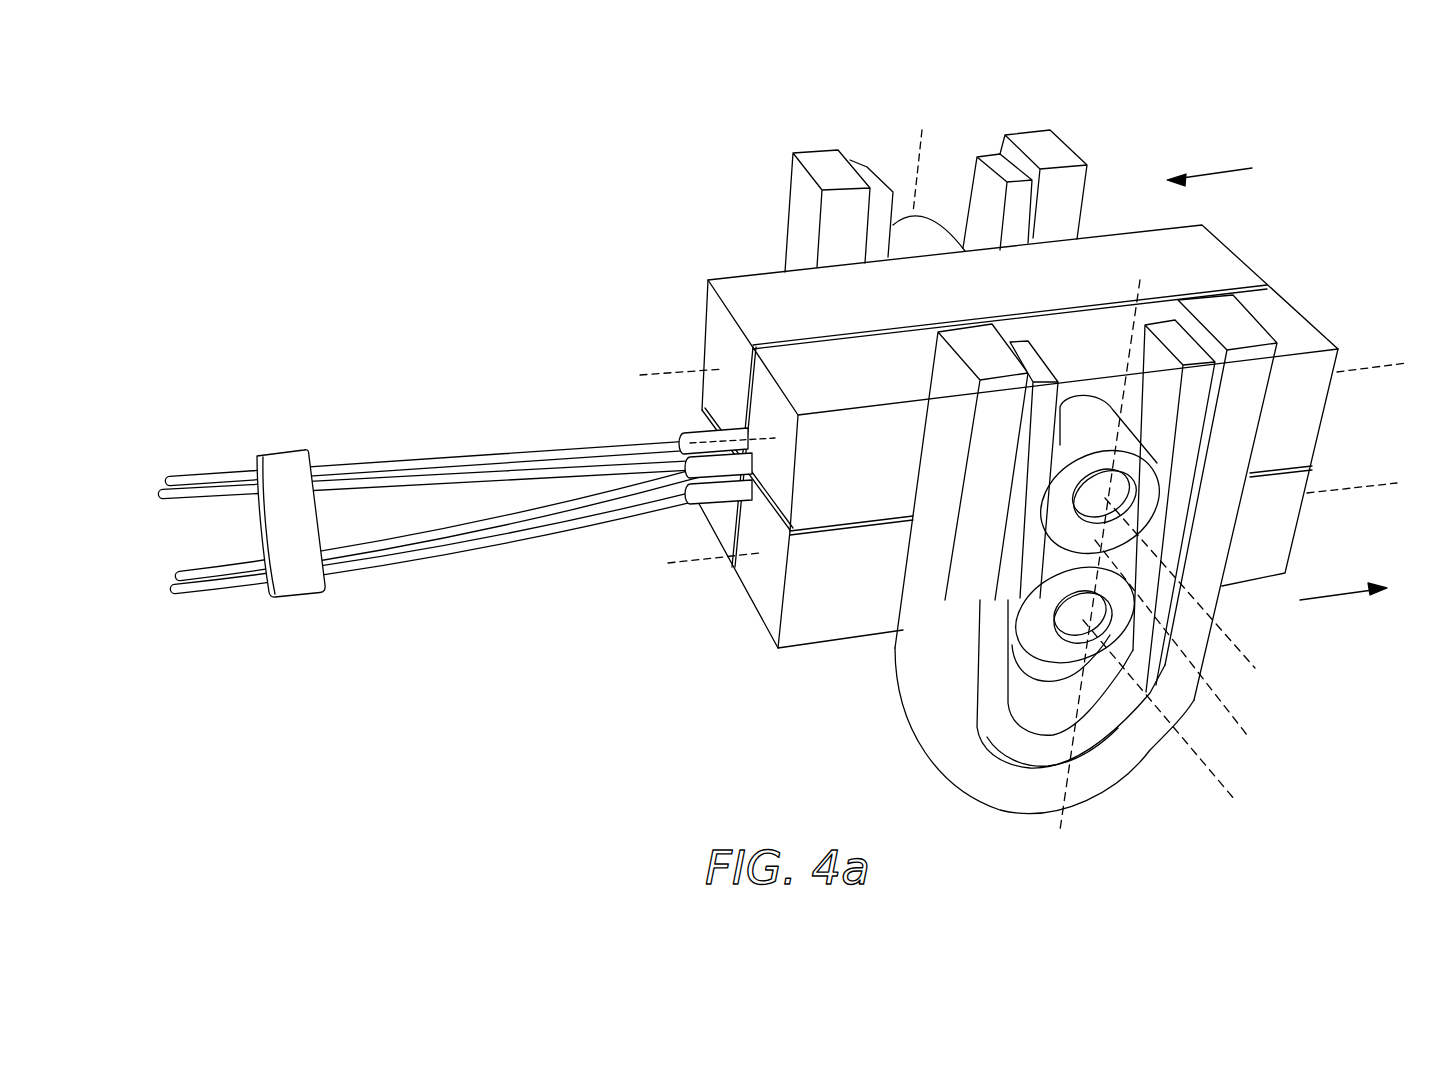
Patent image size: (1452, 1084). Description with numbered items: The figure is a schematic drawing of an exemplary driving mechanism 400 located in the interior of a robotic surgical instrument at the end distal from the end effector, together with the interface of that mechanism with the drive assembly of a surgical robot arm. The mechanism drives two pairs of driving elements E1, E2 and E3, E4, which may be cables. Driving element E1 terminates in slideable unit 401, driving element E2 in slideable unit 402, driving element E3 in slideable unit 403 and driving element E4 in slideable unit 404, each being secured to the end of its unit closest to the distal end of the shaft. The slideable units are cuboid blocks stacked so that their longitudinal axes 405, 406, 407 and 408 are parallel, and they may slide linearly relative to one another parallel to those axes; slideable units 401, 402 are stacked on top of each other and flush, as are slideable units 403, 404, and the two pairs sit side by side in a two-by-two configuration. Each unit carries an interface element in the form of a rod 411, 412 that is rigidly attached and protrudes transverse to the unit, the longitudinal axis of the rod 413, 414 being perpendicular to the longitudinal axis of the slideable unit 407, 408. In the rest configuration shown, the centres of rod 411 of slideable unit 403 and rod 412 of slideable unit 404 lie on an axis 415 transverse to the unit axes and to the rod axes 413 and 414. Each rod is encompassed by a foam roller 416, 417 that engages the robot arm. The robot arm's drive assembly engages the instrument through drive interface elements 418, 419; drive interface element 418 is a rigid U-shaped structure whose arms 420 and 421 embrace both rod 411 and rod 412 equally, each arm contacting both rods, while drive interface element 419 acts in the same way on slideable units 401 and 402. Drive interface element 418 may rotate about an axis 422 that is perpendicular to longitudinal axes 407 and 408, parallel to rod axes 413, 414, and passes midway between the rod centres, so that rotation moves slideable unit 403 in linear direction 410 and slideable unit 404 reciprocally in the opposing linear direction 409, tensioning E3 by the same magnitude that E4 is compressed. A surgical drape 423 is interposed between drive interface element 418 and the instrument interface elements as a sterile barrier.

The driving mechanism 400 is at (513, 208).
The slideable unit 401 is at (712, 307).
The slideable unit 402 is at (716, 520).
The slideable unit 403 is at (1308, 434).
The slideable unit 404 is at (1283, 548).
The longitudinal axis 405 is at (640, 375).
The longitudinal axis 406 is at (434, 503).
The longitudinal axis 407 is at (762, 442).
The longitudinal axis 408 is at (680, 568).
The linear direction 409 is at (1350, 600).
The linear direction 410 is at (1207, 170).
The rod 411 is at (1128, 500).
The rod 412 is at (985, 663).
The longitudinal axis of the rod 413 is at (1258, 652).
The longitudinal axis of the rod 414 is at (1228, 782).
The axis 415 is at (1082, 792).
The foam roller 416 is at (1099, 462).
The foam roller 417 is at (1040, 650).
The drive interface element 418 is at (948, 768).
The drive interface element 419 is at (800, 184).
The arm 420 is at (1248, 415).
The arm 421 is at (978, 478).
The axis 422 is at (1240, 718).
The surgical drape 423 is at (1017, 750).
The driving element E1 is at (484, 458).
The driving element E2 is at (424, 478).
The driving element E3 is at (396, 543).
The driving element E4 is at (460, 544).